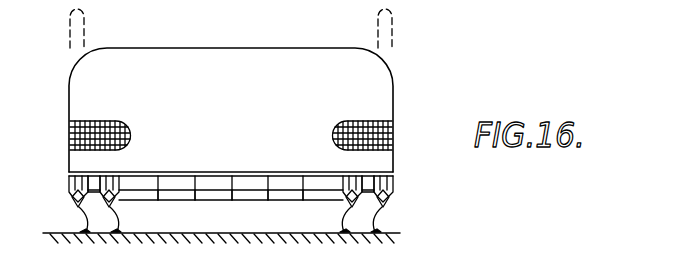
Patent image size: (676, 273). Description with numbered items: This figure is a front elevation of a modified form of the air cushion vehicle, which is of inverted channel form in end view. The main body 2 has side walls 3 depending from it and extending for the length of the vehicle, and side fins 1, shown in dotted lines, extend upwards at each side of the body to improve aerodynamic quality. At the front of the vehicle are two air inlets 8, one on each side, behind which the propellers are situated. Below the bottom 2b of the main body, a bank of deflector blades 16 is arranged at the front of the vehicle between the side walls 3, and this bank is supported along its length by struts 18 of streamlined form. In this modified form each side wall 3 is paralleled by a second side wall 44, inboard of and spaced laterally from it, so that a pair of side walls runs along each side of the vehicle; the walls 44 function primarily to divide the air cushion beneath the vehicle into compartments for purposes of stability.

The side fins 1 is at (86, 36).
The main body 2 is at (235, 63).
The bottom 2b is at (218, 172).
The side walls 3 is at (70, 182).
The air inlets 8 is at (70, 128).
The bank of deflector blades 16 is at (181, 197).
The struts 18 is at (265, 182).
The second side wall 44 is at (118, 178).